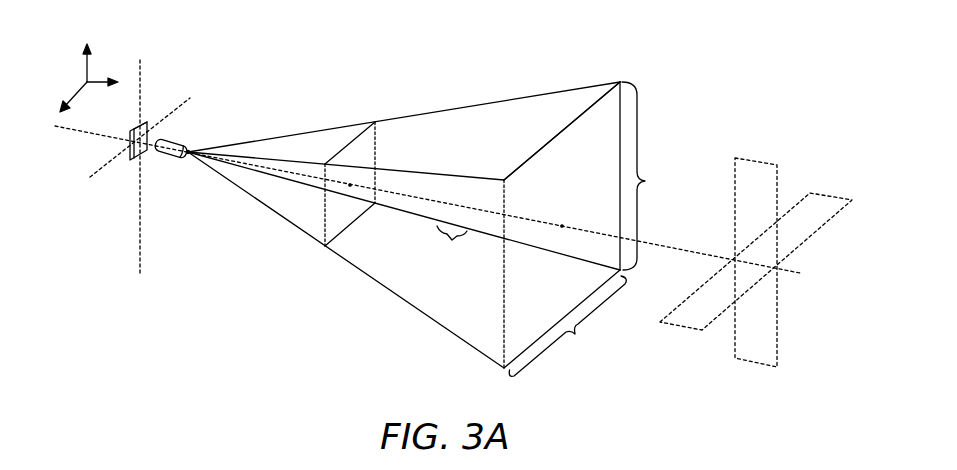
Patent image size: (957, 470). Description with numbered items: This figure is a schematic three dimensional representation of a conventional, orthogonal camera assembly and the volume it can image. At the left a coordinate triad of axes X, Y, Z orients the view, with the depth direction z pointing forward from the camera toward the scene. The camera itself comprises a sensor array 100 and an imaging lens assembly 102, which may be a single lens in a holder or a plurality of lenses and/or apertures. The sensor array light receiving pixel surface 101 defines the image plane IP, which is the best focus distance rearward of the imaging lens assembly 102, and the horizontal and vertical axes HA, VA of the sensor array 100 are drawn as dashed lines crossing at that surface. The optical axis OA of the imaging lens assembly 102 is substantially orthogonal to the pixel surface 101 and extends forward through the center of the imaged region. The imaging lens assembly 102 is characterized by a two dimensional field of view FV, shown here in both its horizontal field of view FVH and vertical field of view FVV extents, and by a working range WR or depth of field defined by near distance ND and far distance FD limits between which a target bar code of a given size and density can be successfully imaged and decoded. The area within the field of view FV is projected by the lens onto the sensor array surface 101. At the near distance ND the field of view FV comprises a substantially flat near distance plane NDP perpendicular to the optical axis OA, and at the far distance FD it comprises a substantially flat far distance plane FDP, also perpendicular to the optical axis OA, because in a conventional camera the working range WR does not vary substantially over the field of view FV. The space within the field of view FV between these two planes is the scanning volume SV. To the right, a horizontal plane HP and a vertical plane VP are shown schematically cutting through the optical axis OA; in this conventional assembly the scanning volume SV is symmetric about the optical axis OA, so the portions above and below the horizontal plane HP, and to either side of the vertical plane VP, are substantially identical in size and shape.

The sensor array 100 is at (117, 147).
The sensor array light receiving pixel surface 101 is at (140, 156).
The imaging lens assembly 102 is at (174, 142).
The image plane IP is at (144, 153).
The horizontal axis HA is at (93, 183).
The vertical axis VA is at (140, 233).
The optical axis OA is at (672, 246).
The near distance ND is at (356, 182).
The near distance plane NDP is at (325, 228).
The far distance FD is at (568, 224).
The far distance plane FDP is at (503, 332).
The field of view FV is at (600, 112).
The vertical field of view FVV is at (657, 176).
The horizontal field of view FVH is at (570, 326).
The working range WR is at (452, 248).
The scanning volume SV is at (399, 280).
The horizontal plane HP is at (686, 320).
The vertical plane VP is at (764, 350).
The X axis X is at (70, 97).
The Y axis Y is at (86, 52).
The Z axis Z is at (105, 73).